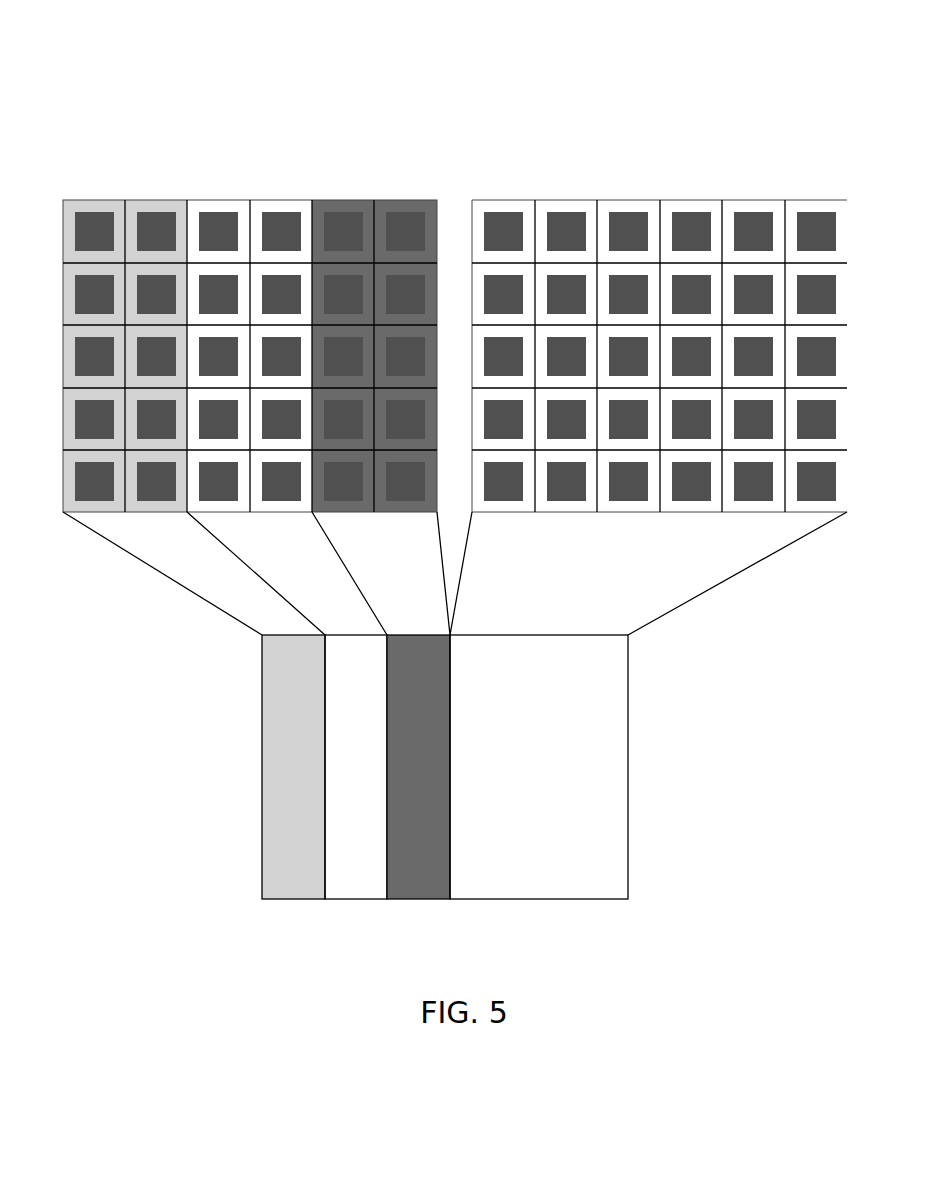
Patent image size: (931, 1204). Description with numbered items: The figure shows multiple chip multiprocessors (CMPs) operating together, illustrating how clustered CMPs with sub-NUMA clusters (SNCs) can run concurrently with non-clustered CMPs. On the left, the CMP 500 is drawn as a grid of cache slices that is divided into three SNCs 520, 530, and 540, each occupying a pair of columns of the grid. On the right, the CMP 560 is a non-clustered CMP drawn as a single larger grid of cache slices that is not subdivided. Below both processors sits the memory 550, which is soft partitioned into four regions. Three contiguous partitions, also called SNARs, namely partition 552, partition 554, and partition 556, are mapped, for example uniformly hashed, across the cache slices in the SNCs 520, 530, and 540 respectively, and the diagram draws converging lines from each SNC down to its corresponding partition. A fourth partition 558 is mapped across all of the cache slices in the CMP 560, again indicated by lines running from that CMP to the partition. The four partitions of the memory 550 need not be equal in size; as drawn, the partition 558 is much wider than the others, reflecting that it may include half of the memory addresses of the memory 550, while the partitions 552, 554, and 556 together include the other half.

The CMP 500 is at (453, 120).
The SNC 520 is at (187, 188).
The SNC 530 is at (312, 188).
The SNC 540 is at (437, 188).
The CMP 560 is at (865, 208).
The memory 550 is at (445, 804).
The partition 552 is at (293, 767).
The partition 554 is at (356, 767).
The partition 556 is at (418, 767).
The partition 558 is at (539, 767).